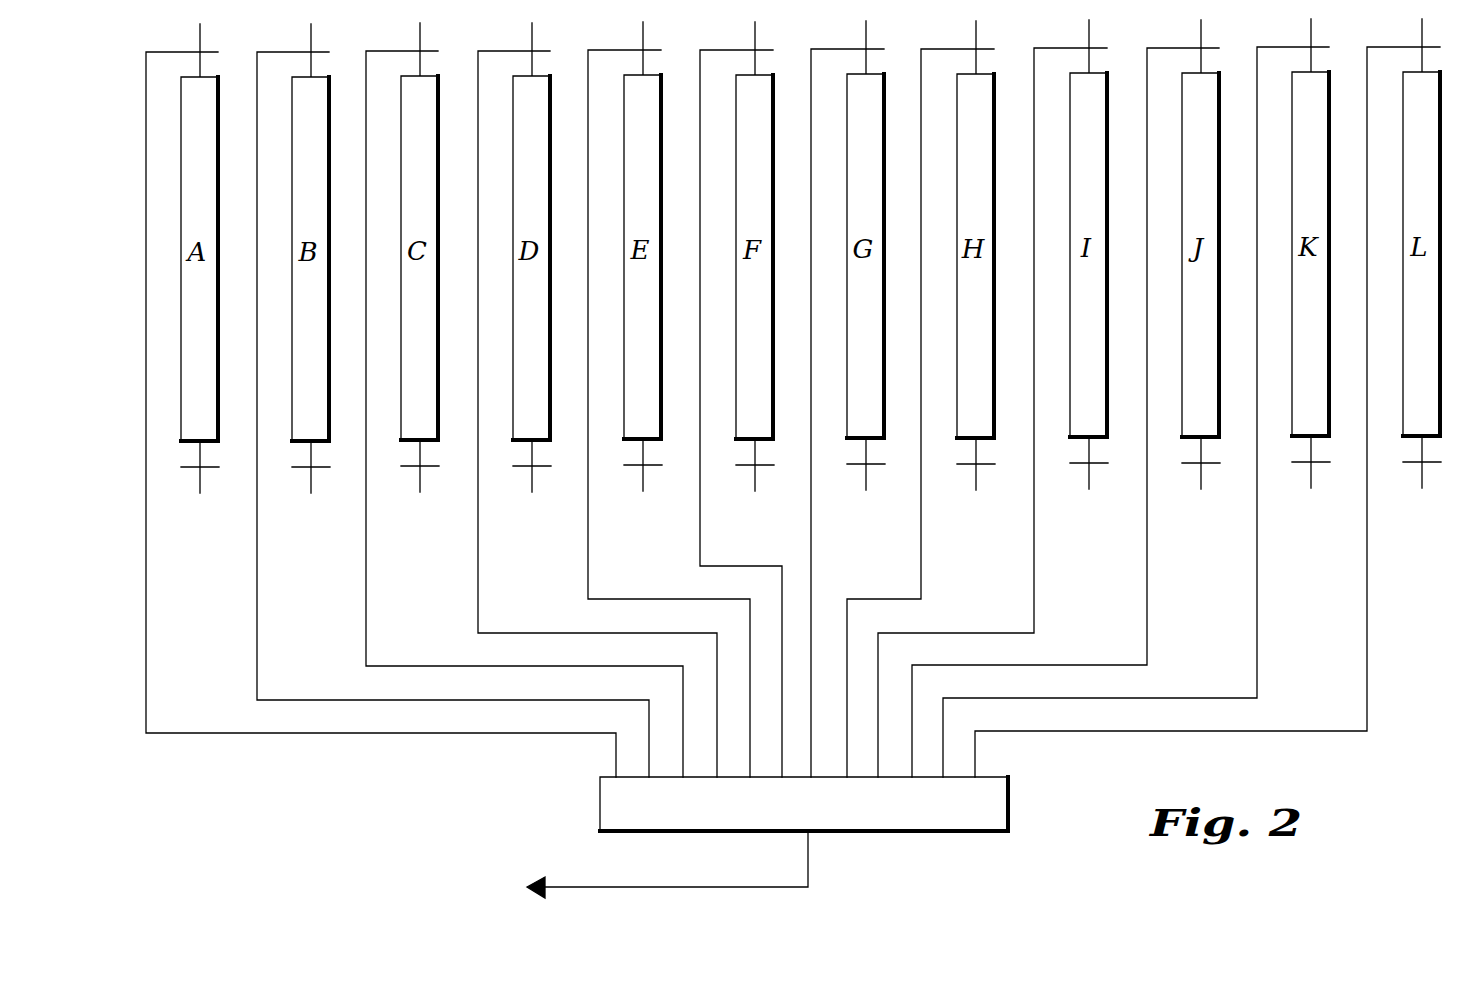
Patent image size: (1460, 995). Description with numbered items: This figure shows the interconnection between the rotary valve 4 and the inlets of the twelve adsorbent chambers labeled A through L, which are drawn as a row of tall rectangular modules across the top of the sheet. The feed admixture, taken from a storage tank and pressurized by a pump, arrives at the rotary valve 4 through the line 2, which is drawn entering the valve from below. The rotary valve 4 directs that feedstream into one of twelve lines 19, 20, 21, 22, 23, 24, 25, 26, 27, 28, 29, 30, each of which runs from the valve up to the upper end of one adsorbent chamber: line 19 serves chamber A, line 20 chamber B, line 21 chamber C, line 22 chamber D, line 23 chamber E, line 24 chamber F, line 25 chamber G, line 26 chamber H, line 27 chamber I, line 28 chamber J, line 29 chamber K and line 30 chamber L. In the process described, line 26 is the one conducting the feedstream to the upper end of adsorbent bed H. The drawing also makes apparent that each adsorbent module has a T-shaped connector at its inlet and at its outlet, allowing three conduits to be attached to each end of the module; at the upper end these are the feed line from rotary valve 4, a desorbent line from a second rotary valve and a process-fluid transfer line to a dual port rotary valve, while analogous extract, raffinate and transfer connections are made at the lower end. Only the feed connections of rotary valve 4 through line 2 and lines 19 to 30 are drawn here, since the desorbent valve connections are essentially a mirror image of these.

The line 2 is at (808, 862).
The rotary valve 4 is at (1010, 790).
The line 19 is at (146, 538).
The line 20 is at (257, 538).
The line 21 is at (366, 538).
The line 22 is at (478, 538).
The line 23 is at (588, 538).
The line 24 is at (700, 538).
The line 25 is at (811, 540).
The line 26 is at (921, 540).
The line 27 is at (1034, 540).
The line 28 is at (1147, 540).
The line 29 is at (1257, 540).
The line 30 is at (1367, 540).